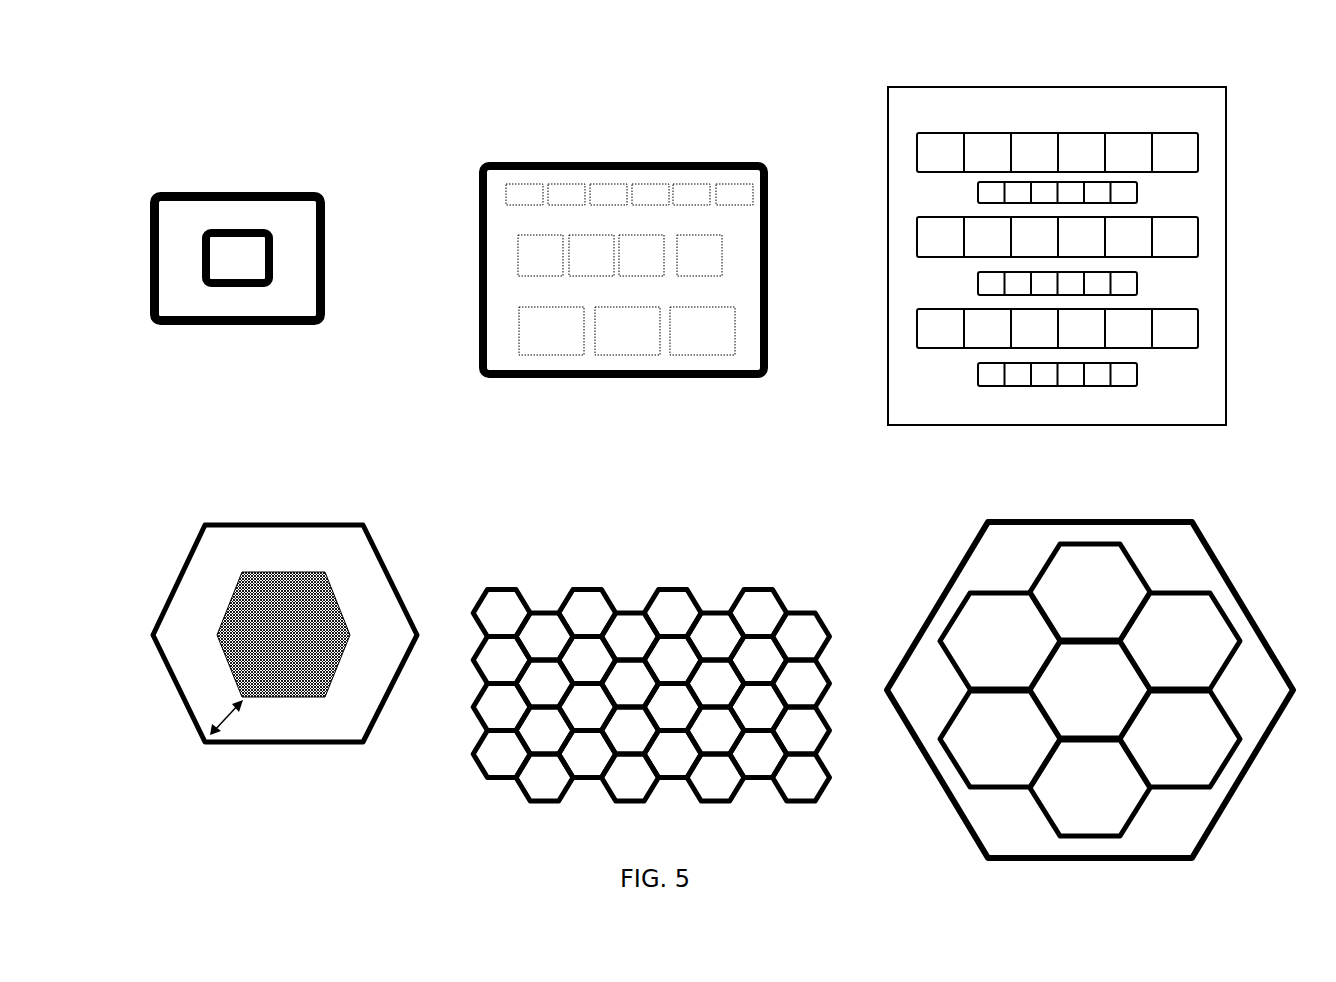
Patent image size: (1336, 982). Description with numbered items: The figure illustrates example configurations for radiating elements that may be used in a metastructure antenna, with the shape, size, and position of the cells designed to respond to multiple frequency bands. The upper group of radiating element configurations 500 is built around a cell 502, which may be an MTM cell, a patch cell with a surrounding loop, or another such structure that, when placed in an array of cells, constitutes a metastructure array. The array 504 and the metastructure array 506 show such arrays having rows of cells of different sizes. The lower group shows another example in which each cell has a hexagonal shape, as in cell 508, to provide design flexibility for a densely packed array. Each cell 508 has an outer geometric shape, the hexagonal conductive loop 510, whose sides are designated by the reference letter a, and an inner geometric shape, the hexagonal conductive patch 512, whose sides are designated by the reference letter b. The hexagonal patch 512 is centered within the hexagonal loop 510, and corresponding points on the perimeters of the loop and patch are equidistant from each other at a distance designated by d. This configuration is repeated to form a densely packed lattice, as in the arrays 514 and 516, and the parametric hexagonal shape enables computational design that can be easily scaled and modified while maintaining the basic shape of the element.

The radiating element configurations 500 is at (208, 92).
The cell 502 is at (238, 192).
The array 504 is at (663, 163).
The metastructure array 506 is at (1066, 86).
The cell 508 is at (265, 462).
The hexagonal conductive loop 510 is at (332, 525).
The hexagonal conductive patch 512 is at (310, 662).
The array 514 is at (679, 587).
The array 516 is at (1090, 520).